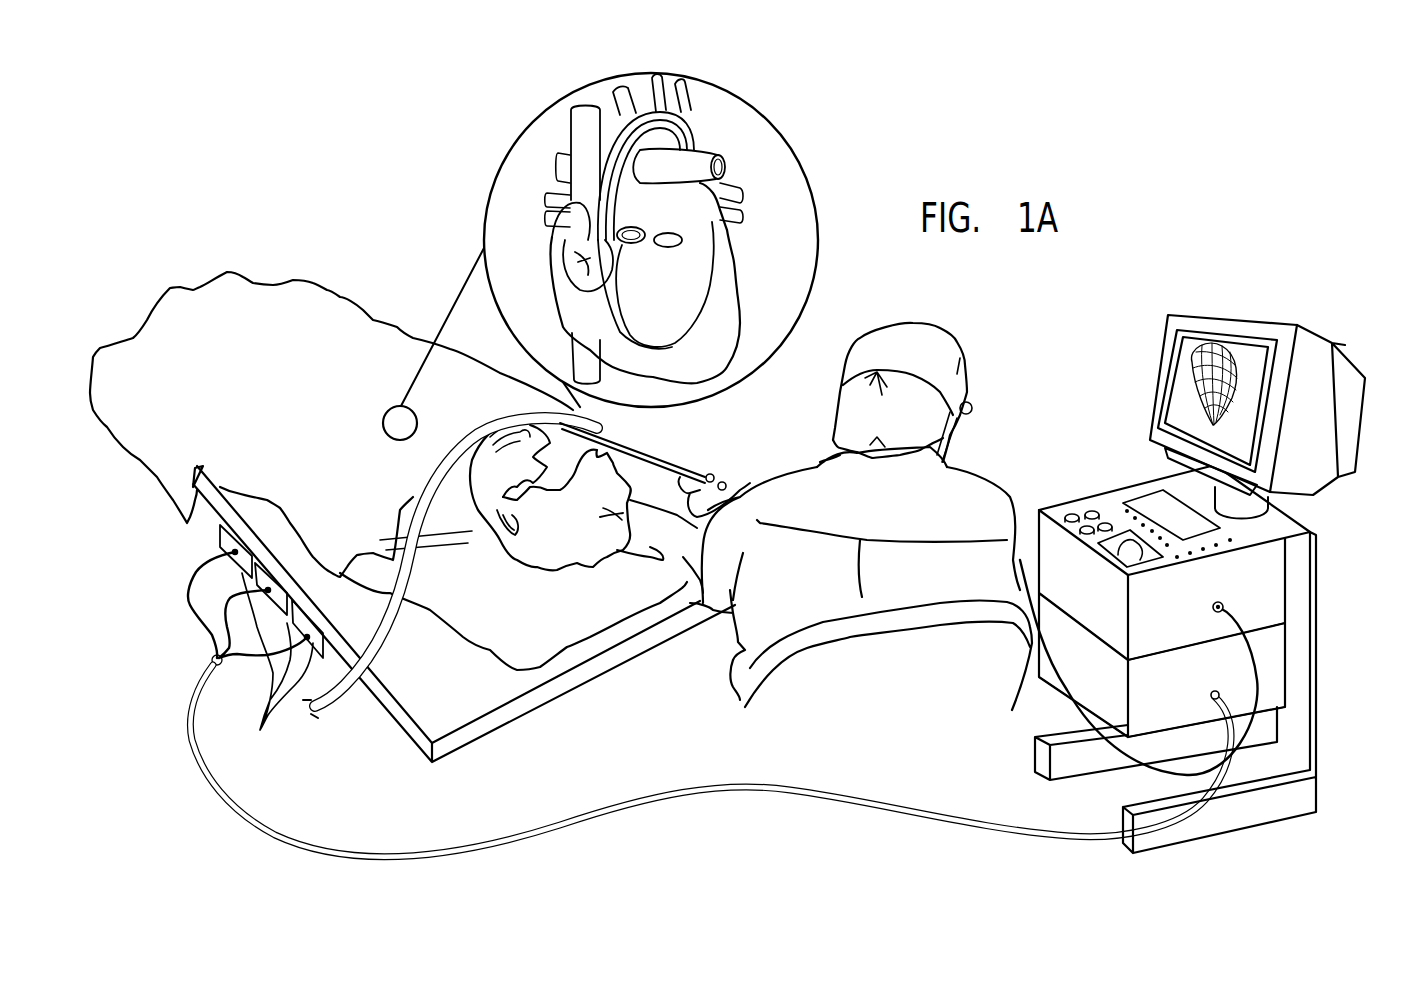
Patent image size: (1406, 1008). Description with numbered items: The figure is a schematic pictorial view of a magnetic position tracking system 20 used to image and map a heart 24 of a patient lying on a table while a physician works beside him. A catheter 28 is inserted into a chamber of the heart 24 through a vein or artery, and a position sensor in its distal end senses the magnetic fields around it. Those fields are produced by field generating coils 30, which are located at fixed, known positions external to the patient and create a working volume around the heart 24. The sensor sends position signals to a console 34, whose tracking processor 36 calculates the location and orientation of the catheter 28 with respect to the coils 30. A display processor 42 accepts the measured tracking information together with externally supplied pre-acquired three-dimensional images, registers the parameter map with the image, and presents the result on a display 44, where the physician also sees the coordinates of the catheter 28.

The magnetic position tracking system 20 is at (1152, 216).
The heart 24 is at (727, 283).
The catheter 28 is at (1216, 614).
The field generating coils 30 is at (250, 656).
The console 34 is at (1336, 628).
The tracking processor 36 is at (1280, 672).
The display processor 42 is at (1272, 570).
The display 44 is at (1305, 340).